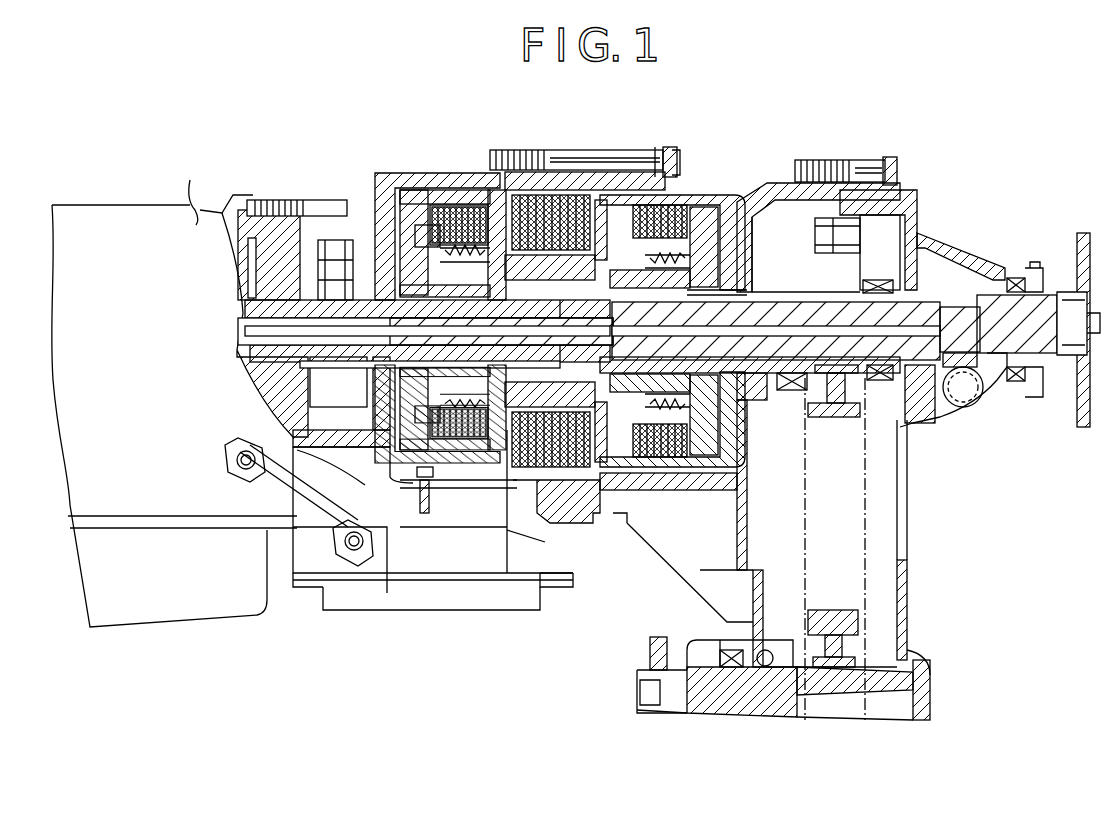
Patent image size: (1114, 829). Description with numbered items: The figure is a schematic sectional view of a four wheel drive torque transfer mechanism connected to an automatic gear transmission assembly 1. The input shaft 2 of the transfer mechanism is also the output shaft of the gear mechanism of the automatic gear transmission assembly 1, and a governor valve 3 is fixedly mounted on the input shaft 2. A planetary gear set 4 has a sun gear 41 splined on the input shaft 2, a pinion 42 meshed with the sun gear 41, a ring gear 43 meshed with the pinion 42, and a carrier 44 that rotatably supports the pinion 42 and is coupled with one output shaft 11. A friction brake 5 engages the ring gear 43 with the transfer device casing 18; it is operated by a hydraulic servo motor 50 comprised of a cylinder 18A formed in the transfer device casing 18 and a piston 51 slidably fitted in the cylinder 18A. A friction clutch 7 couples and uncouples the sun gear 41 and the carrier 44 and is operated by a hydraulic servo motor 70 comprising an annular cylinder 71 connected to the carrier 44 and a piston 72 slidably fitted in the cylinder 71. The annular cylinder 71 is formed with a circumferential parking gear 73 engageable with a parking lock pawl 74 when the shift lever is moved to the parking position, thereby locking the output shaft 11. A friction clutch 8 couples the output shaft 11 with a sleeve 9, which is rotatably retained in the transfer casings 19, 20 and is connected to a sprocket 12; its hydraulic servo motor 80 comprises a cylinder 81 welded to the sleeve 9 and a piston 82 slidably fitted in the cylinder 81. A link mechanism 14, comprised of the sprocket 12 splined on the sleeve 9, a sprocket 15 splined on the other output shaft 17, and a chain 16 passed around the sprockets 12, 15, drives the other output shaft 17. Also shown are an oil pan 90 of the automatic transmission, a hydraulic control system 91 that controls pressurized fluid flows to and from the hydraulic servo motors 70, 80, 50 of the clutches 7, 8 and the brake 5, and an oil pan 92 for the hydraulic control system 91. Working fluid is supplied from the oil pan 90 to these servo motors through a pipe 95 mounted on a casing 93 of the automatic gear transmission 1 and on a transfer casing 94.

The automatic gear transmission assembly 1 is at (196, 217).
The input shaft 2 is at (290, 300).
The governor valve 3 is at (333, 245).
The planetary gear set 4 is at (498, 220).
The friction brake 5 is at (558, 190).
The friction clutch 7 is at (452, 205).
The friction clutch 8 is at (684, 196).
The sleeve 9 is at (765, 375).
The output shaft 11 is at (882, 292).
The sprocket 12 is at (838, 418).
The link mechanism 14 is at (880, 232).
The sprocket 15 is at (845, 610).
The chain 16 is at (828, 238).
The output shaft 17 is at (763, 680).
The transfer device casing 18 is at (590, 150).
The cylinder 18A is at (625, 205).
The transfer casing 19 is at (775, 205).
The transfer casing 20 is at (853, 180).
The sun gear 41 is at (558, 358).
The pinion 42 is at (647, 326).
The ring gear 43 is at (510, 443).
The carrier 44 is at (592, 452).
The hydraulic servo motor 50 is at (608, 200).
The piston 51 is at (616, 222).
The hydraulic servo motor 70 is at (407, 195).
The annular cylinder 71 is at (476, 215).
The piston 72 is at (430, 212).
The parking gear 73 is at (433, 475).
The parking lock pawl 74 is at (420, 490).
The hydraulic servo motor 80 is at (727, 182).
The cylinder 81 is at (732, 215).
The piston 82 is at (700, 205).
The oil pan 90 is at (176, 600).
The hydraulic control system 91 is at (452, 560).
The oil pan 92 is at (498, 605).
The casing 93 is at (205, 500).
The transfer casing 94 is at (328, 570).
The pipe 95 is at (272, 502).